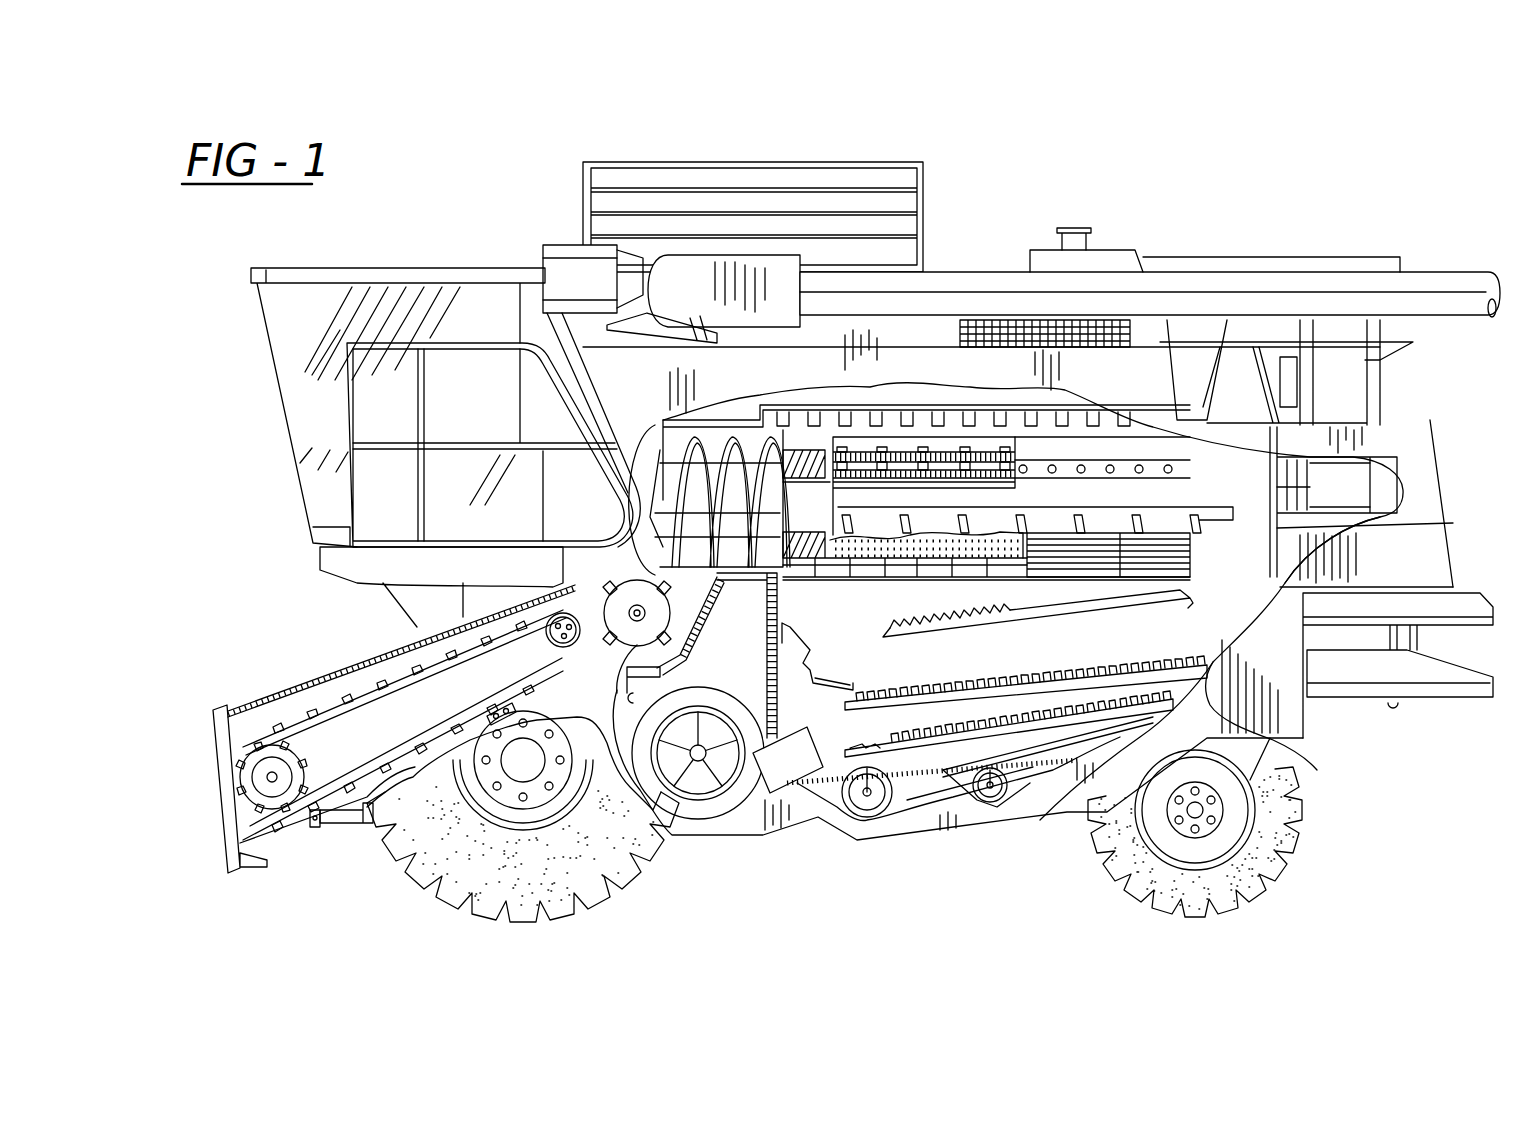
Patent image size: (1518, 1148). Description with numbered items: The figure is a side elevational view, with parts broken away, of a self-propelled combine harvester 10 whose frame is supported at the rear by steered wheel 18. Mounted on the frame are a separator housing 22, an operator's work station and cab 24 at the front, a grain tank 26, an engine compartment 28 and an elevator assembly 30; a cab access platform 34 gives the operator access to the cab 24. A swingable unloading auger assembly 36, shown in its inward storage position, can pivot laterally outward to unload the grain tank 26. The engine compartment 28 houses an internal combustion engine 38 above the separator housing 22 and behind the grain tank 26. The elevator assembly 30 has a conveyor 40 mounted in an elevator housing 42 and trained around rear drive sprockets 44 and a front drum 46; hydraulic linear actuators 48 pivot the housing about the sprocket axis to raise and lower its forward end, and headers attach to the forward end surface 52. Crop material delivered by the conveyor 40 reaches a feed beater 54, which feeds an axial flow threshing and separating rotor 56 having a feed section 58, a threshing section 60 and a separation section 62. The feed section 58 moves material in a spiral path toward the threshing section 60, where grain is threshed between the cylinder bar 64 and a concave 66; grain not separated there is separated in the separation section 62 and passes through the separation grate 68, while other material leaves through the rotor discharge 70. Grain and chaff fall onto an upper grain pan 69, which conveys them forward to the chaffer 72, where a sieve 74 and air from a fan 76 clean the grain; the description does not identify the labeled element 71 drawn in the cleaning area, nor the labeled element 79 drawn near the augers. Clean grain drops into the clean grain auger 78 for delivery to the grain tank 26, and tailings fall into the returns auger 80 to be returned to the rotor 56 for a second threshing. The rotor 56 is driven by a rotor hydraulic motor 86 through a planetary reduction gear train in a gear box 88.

The combine harvester 10 is at (484, 181).
The rear steered wheel 18 is at (1303, 850).
The separator housing 22 is at (1430, 420).
The operator's work station and cab 24 is at (370, 266).
The grain tank 26 is at (583, 180).
The engine compartment 28 is at (1122, 250).
The elevator assembly 30 is at (250, 693).
The cab access platform 34 is at (385, 538).
The unloading auger assembly 36 is at (1428, 270).
The internal combustion engine 38 is at (1062, 230).
The conveyor 40 is at (313, 717).
The elevator housing 42 is at (337, 810).
The rear drive sprockets 44 is at (507, 650).
The front drum 46 is at (313, 813).
The hydraulic linear actuators 48 is at (350, 817).
The forward end surface 52 is at (217, 787).
The feed beater 54 is at (712, 813).
The threshing and separating rotor 56 is at (1148, 417).
The feed section 58 is at (730, 440).
The threshing section 60 is at (860, 437).
The separation section 62 is at (1050, 433).
The cylinder bar 64 is at (947, 437).
The concave 66 is at (867, 580).
The separation grate 68 is at (1140, 570).
The upper grain pan 69 is at (1330, 590).
The rotor discharge 70 is at (1430, 530).
The chaffer sieve 71 is at (912, 702).
The chaffer 72 is at (1357, 689).
The sieve 74 is at (1070, 743).
The fan 76 is at (718, 813).
The clean grain auger 78 is at (850, 797).
The tailings auger 79 is at (1033, 753).
The returns auger 80 is at (963, 800).
The rotor hydraulic motor 86 is at (1383, 483).
The gear box 88 is at (1385, 525).